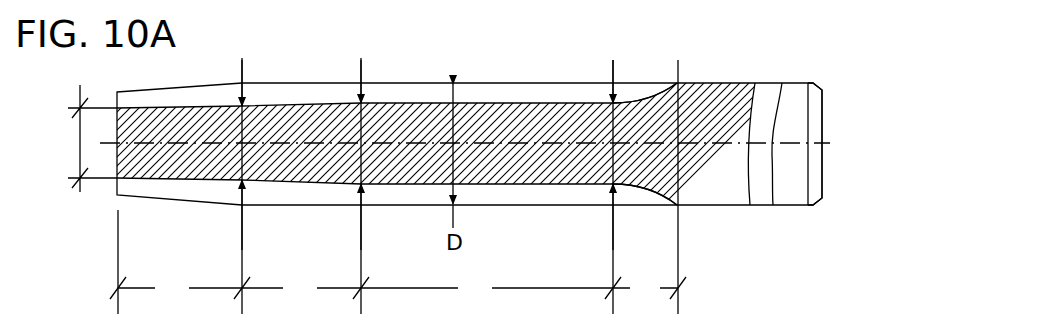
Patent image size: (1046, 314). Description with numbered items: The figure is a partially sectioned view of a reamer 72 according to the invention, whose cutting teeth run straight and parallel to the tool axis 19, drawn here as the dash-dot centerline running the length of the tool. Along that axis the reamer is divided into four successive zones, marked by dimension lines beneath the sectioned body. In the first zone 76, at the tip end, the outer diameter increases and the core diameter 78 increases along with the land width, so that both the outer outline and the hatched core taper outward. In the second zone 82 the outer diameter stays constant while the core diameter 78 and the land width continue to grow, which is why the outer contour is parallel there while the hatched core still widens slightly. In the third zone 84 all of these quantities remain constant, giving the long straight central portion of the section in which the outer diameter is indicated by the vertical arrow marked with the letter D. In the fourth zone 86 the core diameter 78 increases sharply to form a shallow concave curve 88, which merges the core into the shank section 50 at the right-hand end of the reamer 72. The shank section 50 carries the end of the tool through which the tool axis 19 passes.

The reamer 72 is at (495, 53).
The core diameter 78 is at (68, 154).
The shallow concave curve 88 is at (653, 88).
The shank section 50 is at (792, 86).
The tool axis 19 is at (815, 205).
The first zone 76 is at (186, 298).
The second zone 82 is at (315, 298).
The third zone 84 is at (490, 298).
The fourth zone 86 is at (660, 298).